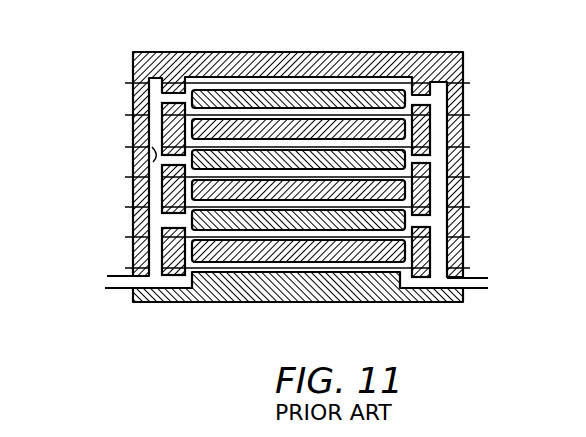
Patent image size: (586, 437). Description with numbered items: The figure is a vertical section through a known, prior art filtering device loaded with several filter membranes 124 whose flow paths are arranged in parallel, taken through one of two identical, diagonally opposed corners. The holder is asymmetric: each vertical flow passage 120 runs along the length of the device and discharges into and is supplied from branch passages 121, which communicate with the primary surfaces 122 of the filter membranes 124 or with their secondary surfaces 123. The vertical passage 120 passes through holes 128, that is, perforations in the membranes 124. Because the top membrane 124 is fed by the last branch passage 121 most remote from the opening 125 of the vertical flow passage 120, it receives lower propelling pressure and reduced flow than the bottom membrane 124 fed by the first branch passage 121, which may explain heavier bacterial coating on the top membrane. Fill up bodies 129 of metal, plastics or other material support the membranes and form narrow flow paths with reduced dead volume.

The vertical flow passage 120 is at (153, 193).
The branch passage 121 is at (172, 92).
The primary surface 122 is at (241, 100).
The secondary surface 123 is at (362, 117).
The filter membrane 124 is at (296, 72).
The opening 125 is at (112, 279).
The hole 128 is at (150, 157).
The fill up body 129 is at (405, 160).